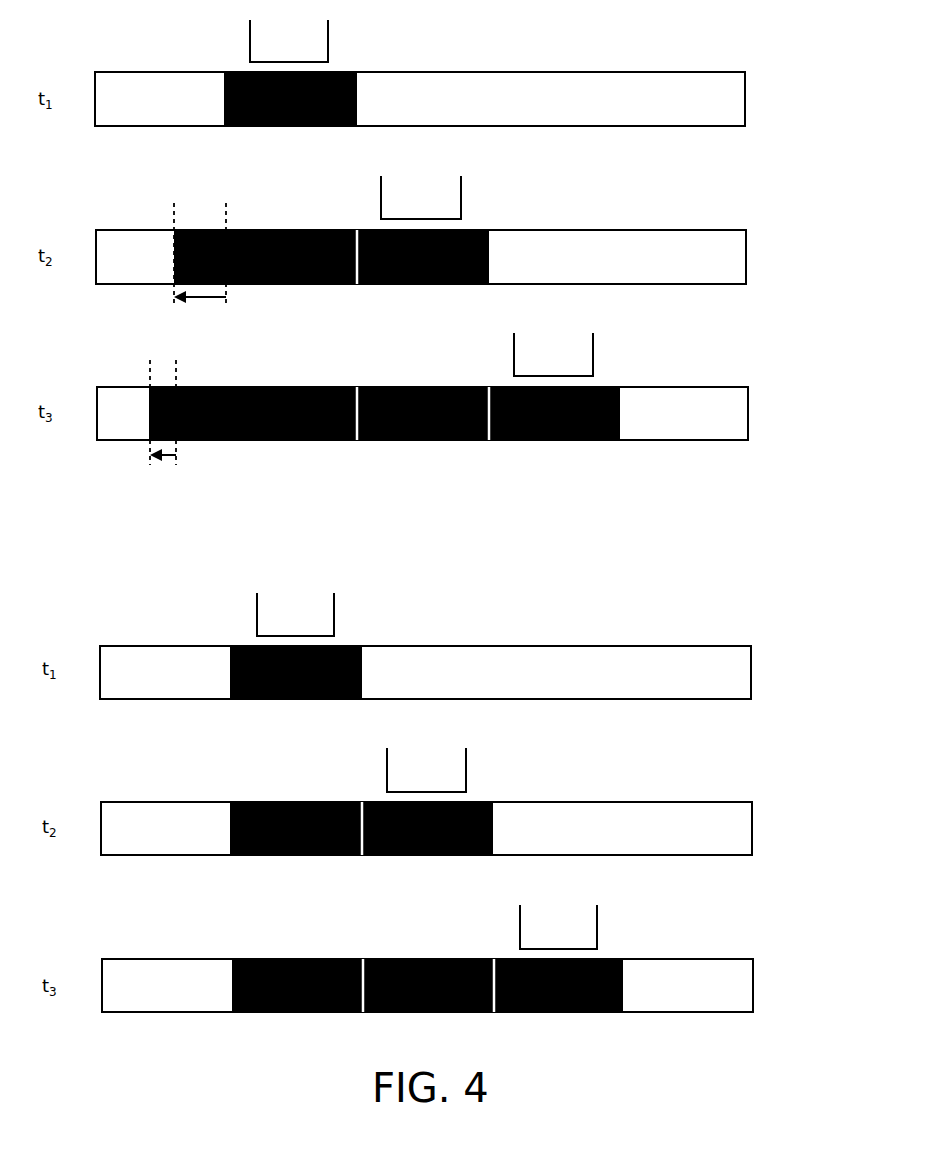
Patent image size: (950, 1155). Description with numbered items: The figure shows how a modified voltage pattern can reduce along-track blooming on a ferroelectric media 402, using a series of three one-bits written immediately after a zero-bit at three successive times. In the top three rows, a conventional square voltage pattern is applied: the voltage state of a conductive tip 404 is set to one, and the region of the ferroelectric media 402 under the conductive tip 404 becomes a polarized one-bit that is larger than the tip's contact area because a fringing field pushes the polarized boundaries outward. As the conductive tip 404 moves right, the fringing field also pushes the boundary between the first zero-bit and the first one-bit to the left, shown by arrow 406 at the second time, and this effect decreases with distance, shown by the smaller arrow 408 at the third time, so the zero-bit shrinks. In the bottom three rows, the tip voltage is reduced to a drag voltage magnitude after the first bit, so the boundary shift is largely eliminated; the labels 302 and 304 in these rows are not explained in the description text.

The register / bit sequence 302 is at (751, 672).
The input bit value 304 is at (381, 193).
The ferroelectric media 402 is at (745, 100).
The conductive tip 404 is at (250, 36).
The arrow 406 is at (223, 300).
The smaller arrow 408 is at (172, 462).